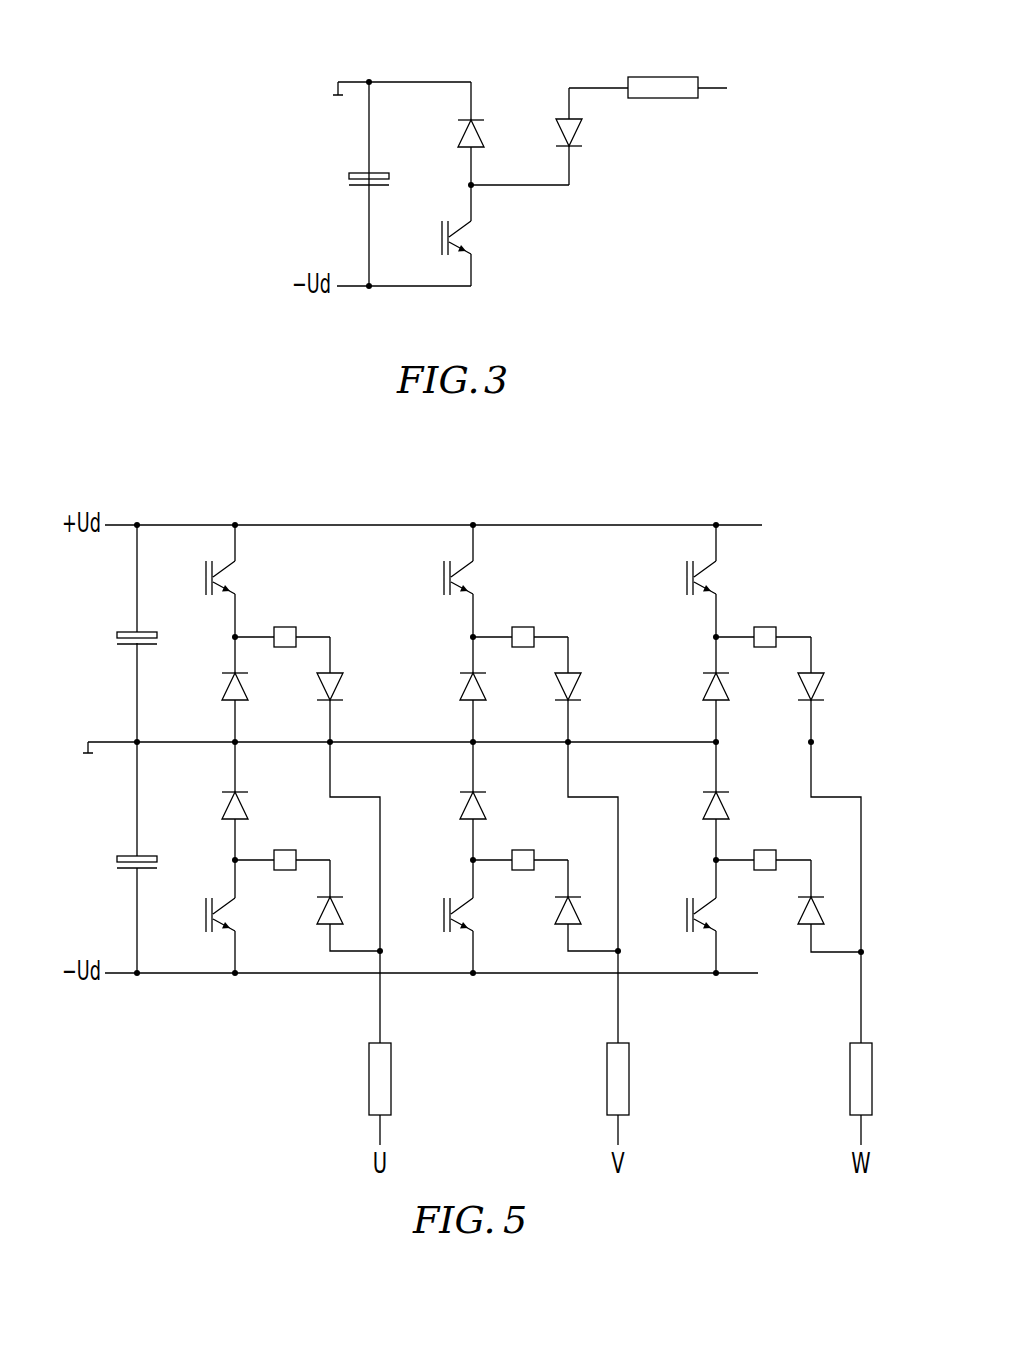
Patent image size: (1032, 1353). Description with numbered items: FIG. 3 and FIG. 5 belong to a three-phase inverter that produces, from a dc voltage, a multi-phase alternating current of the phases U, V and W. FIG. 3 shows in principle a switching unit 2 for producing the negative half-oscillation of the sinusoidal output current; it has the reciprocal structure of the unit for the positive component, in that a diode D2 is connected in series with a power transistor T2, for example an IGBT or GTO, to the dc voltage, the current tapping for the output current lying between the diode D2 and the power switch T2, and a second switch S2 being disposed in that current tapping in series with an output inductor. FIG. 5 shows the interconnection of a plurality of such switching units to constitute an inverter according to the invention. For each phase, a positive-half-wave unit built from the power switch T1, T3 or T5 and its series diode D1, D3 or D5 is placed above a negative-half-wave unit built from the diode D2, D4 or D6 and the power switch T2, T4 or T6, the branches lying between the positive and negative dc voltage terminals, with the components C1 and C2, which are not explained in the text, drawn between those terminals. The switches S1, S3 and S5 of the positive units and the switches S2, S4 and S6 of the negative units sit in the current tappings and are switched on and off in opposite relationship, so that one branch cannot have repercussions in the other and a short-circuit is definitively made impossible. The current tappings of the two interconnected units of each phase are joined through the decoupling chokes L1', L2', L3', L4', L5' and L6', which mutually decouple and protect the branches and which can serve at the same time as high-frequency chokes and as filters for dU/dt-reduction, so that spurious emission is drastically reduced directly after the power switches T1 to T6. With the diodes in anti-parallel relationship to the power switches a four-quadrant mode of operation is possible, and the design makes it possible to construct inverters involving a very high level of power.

In FIG. 3, the switching branch (D2/T2 module) 2 is at (482, 172).
In FIG. 3, the diode D2 is at (451, 130).
In FIG. 5, the diode D2 is at (220, 801).
In FIG. 3, the power switch T2 is at (474, 238).
In FIG. 5, the power switch T2 is at (234, 916).
In FIG. 3, the second switch S2 is at (584, 136).
In FIG. 5, the second switch S2 is at (348, 905).
In FIG. 5, the DC link capacitor C1 is at (119, 639).
In FIG. 5, the DC link capacitor C2 is at (119, 869).
In FIG. 5, the power transistor T1 is at (234, 581).
In FIG. 5, the power switch T3 is at (472, 581).
In FIG. 5, the power switch T4 is at (472, 916).
In FIG. 5, the power switch T5 is at (715, 581).
In FIG. 5, the power switch T6 is at (715, 916).
In FIG. 5, the diode D1 is at (220, 689).
In FIG. 5, the diode D3 is at (458, 689).
In FIG. 5, the diode D4 is at (458, 801).
In FIG. 5, the diode D5 is at (701, 689).
In FIG. 5, the diode D6 is at (701, 801).
In FIG. 5, the second switch S1 is at (344, 689).
In FIG. 5, the switch S3 is at (582, 689).
In FIG. 5, the switch S4 is at (586, 905).
In FIG. 5, the switch S5 is at (825, 689).
In FIG. 5, the switch S6 is at (829, 906).
In FIG. 5, the decoupling choke L1' is at (282, 623).
In FIG. 5, the decoupling choke L2' is at (282, 846).
In FIG. 5, the decoupling choke L3' is at (520, 623).
In FIG. 5, the decoupling choke L4' is at (520, 846).
In FIG. 5, the decoupling choke L5' is at (763, 623).
In FIG. 5, the decoupling choke L6' is at (763, 846).